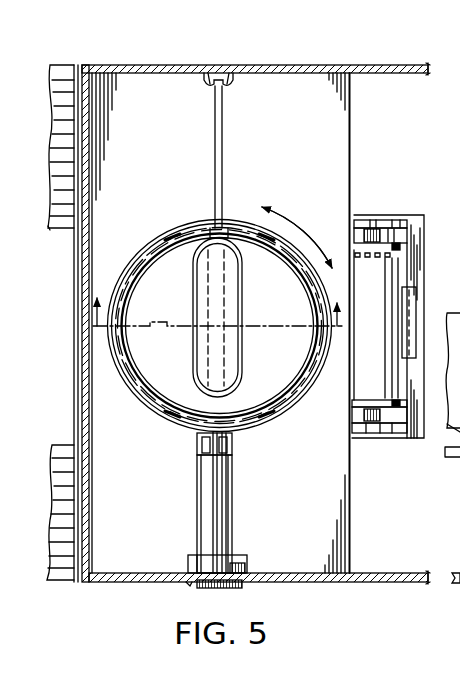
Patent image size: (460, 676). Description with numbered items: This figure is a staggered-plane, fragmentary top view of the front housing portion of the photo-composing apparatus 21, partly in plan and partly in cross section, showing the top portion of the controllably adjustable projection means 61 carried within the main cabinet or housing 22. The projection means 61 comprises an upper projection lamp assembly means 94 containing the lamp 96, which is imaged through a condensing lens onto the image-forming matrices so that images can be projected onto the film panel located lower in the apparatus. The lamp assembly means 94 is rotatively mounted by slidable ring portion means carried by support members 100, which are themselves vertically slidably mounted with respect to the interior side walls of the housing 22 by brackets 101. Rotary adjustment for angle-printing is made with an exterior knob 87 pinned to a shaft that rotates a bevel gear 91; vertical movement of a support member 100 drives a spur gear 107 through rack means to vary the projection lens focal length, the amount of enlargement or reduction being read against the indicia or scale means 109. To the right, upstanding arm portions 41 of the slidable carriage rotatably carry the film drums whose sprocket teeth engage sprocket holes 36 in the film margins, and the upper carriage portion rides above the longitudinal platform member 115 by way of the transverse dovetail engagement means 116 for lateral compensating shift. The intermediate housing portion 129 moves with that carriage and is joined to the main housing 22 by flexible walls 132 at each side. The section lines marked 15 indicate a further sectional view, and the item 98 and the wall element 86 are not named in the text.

The photo-composing apparatus 21 is at (290, 42).
The main cabinet or housing 22 is at (119, 580).
The flexible walls 132 is at (66, 65).
The intermediate housing portion 129 is at (49, 230).
The support members 100 is at (226, 150).
The brackets 101 is at (232, 82).
The projection means 61 is at (147, 416).
The section line 15- 15 is at (217, 302).
The lamp 96 is at (233, 287).
The projection lamp assembly means 94 is at (300, 395).
The ring track member 98 is at (282, 411).
The bevel gear 91 is at (234, 438).
The spur gear 107 is at (249, 566).
The exterior knob 87 is at (234, 589).
The indicia or scale means 109 is at (190, 585).
The right side wall 86 is at (344, 502).
The upstanding arm portions 41 is at (362, 216).
The sprocket holes 36 is at (396, 248).
The longitudinal platform member 115 is at (422, 270).
The transverse dovetail engagement means 116 is at (418, 304).